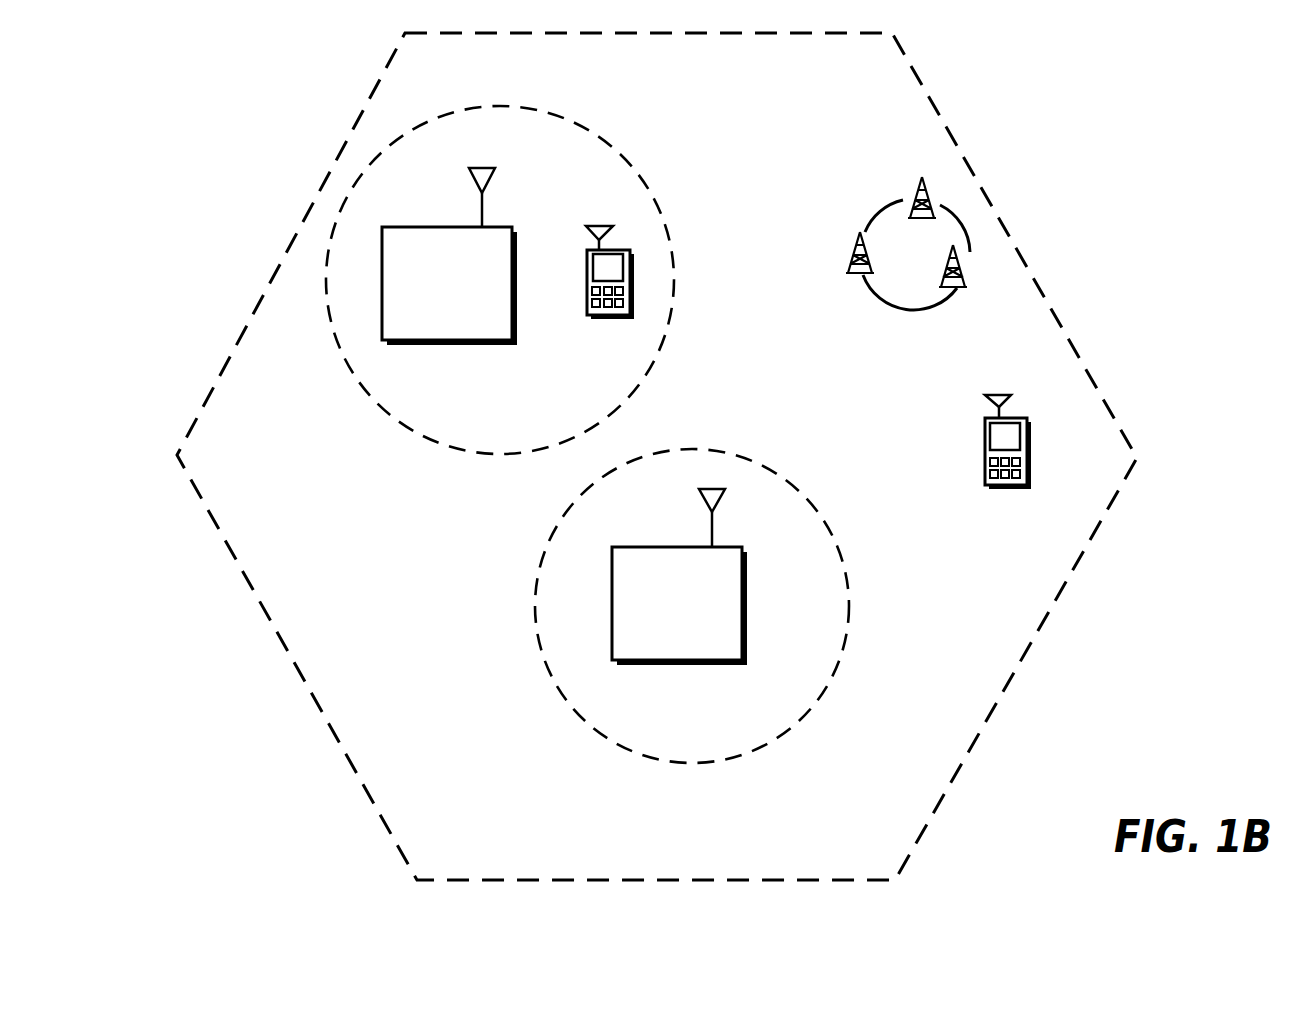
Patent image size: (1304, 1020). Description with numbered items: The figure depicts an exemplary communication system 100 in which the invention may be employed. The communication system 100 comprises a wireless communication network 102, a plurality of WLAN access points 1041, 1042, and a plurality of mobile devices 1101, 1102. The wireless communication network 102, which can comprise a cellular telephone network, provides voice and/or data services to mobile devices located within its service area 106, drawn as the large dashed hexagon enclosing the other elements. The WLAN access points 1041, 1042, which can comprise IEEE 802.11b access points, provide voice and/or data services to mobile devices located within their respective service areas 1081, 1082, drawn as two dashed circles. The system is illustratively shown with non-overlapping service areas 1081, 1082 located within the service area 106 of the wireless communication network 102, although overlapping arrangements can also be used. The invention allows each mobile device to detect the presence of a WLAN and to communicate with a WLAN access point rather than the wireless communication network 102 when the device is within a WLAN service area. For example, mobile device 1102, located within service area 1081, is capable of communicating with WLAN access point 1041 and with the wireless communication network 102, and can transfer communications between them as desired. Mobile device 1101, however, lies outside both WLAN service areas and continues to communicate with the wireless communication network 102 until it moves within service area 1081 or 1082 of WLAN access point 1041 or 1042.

The communication system 100 is at (1215, 660).
The wireless communication network 102 is at (931, 265).
The WLAN access point 1041 is at (440, 340).
The WLAN access point 1042 is at (667, 660).
The service area 106 is at (958, 137).
The service area 1081 is at (610, 143).
The service area 1082 is at (838, 658).
The mobile device 1101 is at (1002, 485).
The mobile device 1102 is at (594, 317).